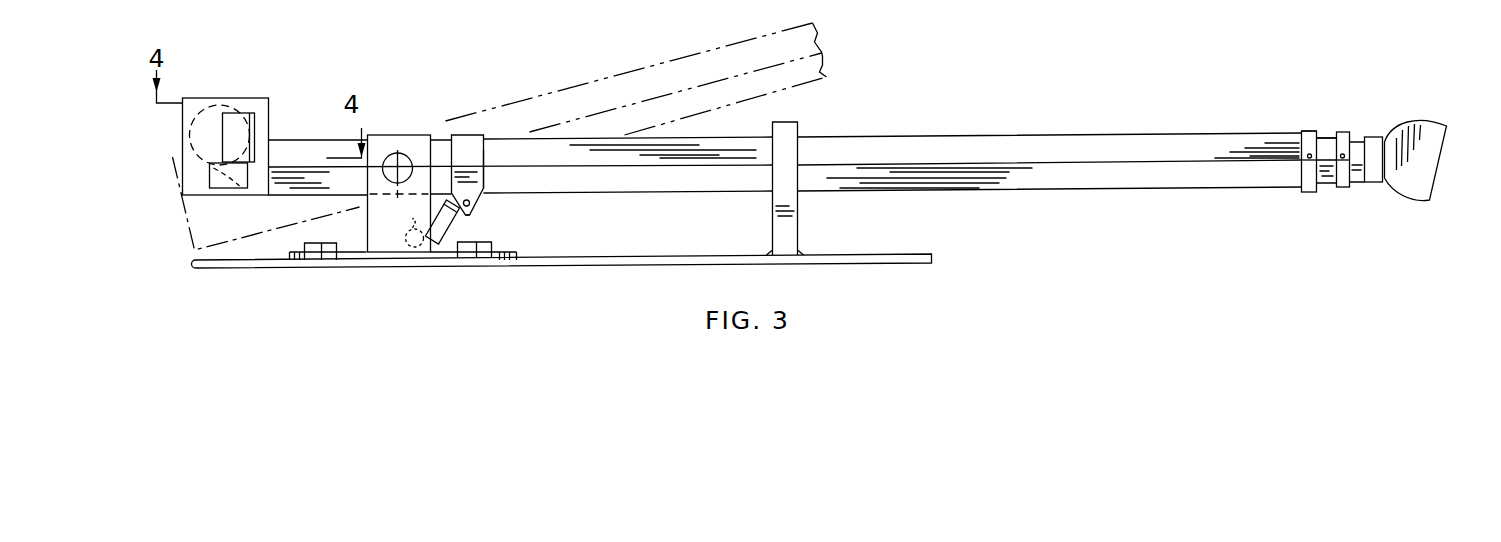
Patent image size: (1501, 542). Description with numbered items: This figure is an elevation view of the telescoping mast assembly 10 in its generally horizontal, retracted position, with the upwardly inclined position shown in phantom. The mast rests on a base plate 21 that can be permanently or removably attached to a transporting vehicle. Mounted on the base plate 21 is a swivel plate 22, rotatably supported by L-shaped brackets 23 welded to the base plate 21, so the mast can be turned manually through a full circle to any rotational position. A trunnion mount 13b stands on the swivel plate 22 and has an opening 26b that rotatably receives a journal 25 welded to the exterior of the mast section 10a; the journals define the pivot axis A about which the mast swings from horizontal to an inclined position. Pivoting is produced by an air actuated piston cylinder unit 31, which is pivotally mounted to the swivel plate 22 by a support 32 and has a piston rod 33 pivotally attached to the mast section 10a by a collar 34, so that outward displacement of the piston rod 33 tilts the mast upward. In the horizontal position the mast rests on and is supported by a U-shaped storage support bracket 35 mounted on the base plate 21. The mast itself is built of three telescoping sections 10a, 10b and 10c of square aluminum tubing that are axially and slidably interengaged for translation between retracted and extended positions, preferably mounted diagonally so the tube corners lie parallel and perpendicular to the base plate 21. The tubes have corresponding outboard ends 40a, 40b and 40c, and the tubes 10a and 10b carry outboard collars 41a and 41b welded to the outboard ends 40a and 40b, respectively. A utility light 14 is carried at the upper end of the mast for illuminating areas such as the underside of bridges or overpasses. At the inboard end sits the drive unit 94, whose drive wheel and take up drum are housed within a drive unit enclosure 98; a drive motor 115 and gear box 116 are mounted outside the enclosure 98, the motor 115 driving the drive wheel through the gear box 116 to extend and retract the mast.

The telescoping mast assembly 10 is at (945, 118).
The mast section 10a is at (857, 147).
The mast section 10b is at (1328, 185).
The mast section 10c is at (1358, 182).
The trunnion mount 13b is at (378, 238).
The utility light 14 is at (1428, 180).
The base plate 21 is at (912, 257).
The swivel plate 22 is at (343, 256).
The L-shaped brackets 23 is at (483, 255).
The journal 25 is at (414, 166).
The opening 26b is at (407, 158).
The pivot axis A is at (393, 158).
The air actuated piston cylinder unit 31 is at (440, 237).
The support 32 is at (413, 253).
The piston rod 33 is at (466, 215).
The collar 34 is at (484, 182).
The U-shaped storage support bracket 35 is at (792, 228).
The outboard end 40a is at (1300, 177).
The outboard end 40b is at (1332, 136).
The outboard end 40c is at (1364, 131).
The outboard collar 41a is at (1305, 131).
The outboard collar 41b is at (1343, 132).
The drive unit 94 is at (247, 93).
The drive unit enclosure 98 is at (207, 98).
The drive motor 115 is at (250, 127).
The gear box 116 is at (240, 182).